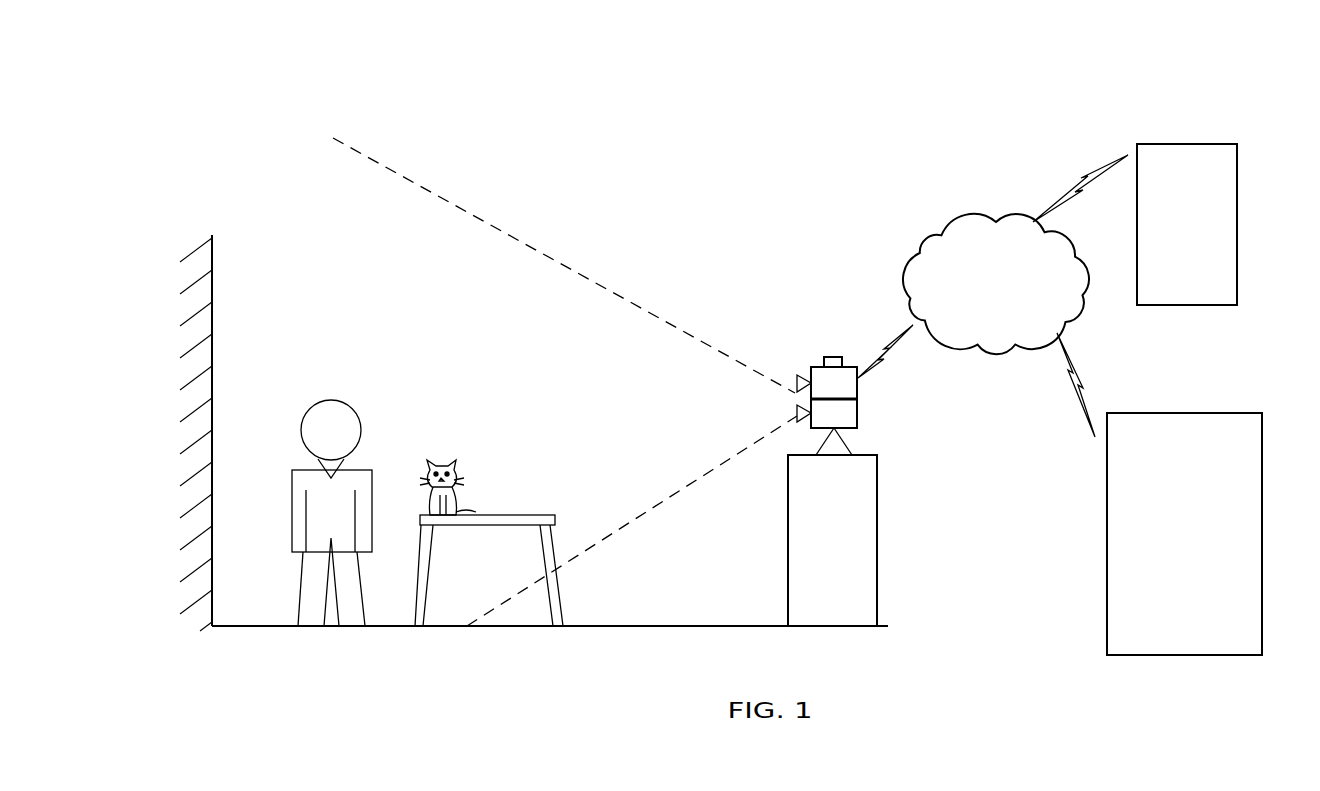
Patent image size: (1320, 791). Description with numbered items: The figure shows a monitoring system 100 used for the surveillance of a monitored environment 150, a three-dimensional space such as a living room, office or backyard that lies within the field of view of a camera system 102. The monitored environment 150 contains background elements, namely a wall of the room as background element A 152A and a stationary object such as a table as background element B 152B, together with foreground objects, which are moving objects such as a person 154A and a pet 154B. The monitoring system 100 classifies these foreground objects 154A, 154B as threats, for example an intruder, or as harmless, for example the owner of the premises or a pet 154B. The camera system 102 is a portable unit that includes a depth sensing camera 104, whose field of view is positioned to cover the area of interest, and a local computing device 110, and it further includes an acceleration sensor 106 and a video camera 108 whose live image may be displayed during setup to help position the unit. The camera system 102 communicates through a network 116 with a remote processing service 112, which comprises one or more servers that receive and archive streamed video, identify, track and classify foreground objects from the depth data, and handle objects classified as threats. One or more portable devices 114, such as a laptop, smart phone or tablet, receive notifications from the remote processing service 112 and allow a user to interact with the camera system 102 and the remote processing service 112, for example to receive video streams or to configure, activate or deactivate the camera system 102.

The monitoring system 100 is at (835, 168).
The camera system 102 is at (826, 345).
The depth sensing camera 104 is at (797, 413).
The acceleration sensor 106 is at (822, 378).
The video camera 108 is at (850, 432).
The local computing device 110 is at (858, 418).
The remote processing service 112 is at (1169, 587).
The portable device 114 is at (1172, 262).
The network 116 is at (977, 318).
The monitored environment 150 is at (271, 228).
The background element A 152A is at (212, 360).
The background element B 152B is at (560, 608).
The foreground object (person) 154A is at (352, 412).
The foreground object (pet) 154B is at (462, 475).